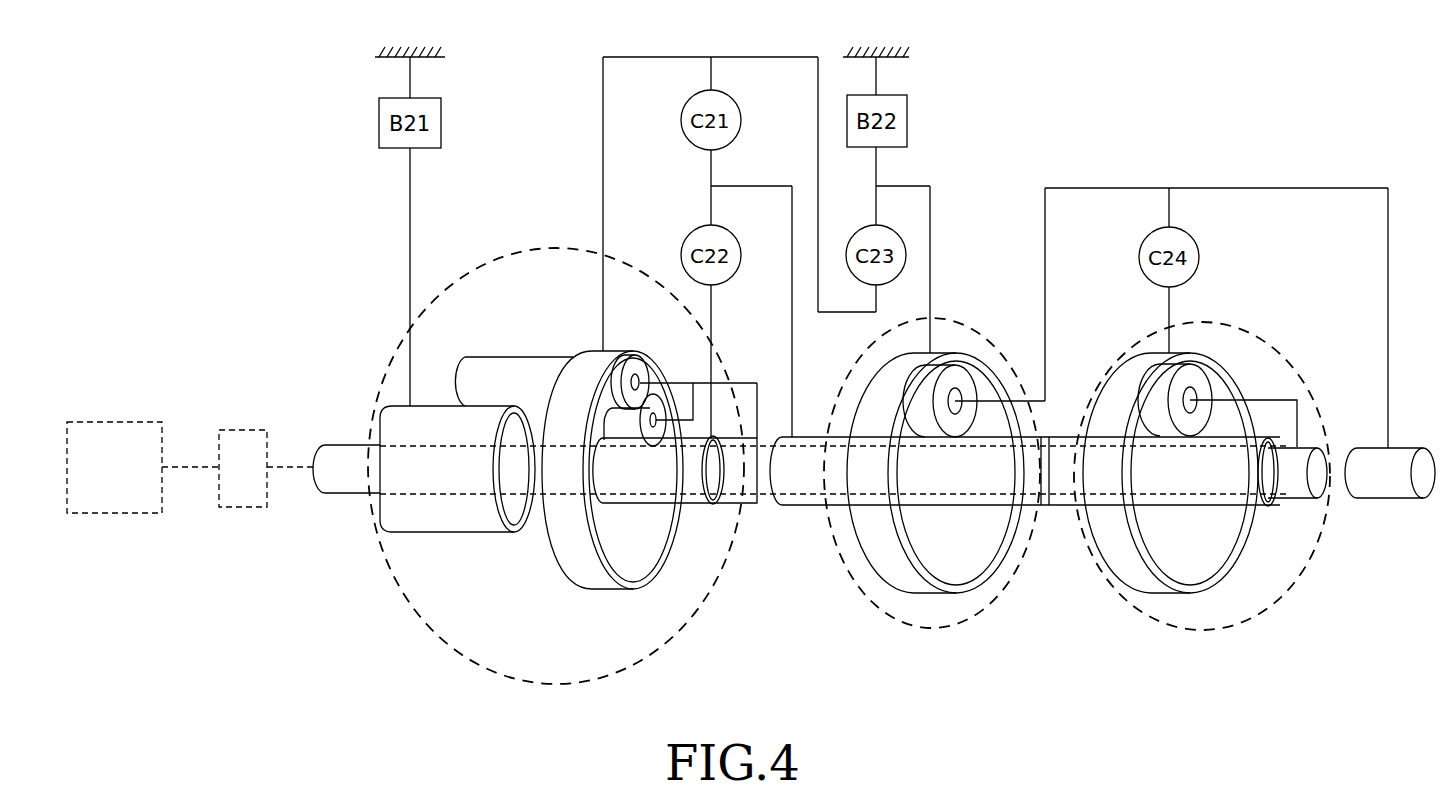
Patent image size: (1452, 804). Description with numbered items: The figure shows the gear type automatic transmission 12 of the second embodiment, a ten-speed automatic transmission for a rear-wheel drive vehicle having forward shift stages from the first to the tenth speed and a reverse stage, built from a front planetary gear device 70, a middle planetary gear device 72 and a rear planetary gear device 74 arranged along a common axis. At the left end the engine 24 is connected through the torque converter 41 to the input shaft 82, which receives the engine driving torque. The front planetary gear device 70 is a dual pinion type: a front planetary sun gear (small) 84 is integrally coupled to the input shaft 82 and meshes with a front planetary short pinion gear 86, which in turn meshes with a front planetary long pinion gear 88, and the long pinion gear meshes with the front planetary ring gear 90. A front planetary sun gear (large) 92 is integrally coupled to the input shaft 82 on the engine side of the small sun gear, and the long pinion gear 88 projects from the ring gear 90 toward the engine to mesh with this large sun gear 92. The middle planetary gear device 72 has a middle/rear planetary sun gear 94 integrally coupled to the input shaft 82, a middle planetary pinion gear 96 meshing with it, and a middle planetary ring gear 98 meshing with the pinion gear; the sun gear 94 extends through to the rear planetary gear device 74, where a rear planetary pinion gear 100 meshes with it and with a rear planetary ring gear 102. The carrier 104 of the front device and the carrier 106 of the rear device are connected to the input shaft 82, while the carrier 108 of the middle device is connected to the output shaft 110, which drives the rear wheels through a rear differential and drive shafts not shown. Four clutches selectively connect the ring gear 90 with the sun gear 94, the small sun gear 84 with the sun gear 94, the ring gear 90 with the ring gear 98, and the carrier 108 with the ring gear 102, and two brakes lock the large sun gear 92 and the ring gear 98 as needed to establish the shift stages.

The gear type automatic transmission 12 is at (1212, 113).
The engine 24 is at (118, 421).
The torque converter 41 is at (245, 428).
The front planetary gear device 70 is at (526, 247).
The middle planetary gear device 72 is at (970, 622).
The rear planetary gear device 74 is at (1237, 322).
The input shaft 82 is at (336, 444).
The front planetary sun gear (small) 84 is at (693, 490).
The front planetary short pinion gear 86 is at (625, 432).
The front planetary long pinion gear 88 is at (500, 368).
The front planetary ring gear 90 is at (592, 590).
The front planetary sun gear (large) 92 is at (457, 530).
The middle/rear planetary sun gear 94 is at (1055, 508).
The middle planetary pinion gear 96 is at (928, 425).
The middle planetary ring gear 98 is at (905, 578).
The rear planetary pinion gear 100 is at (1153, 410).
The rear planetary ring gear 102 is at (1155, 588).
The carrier of the front planetary gear device 104 is at (681, 383).
The carrier of the rear planetary gear device 106 is at (1280, 400).
The carrier of the middle planetary gear device 108 is at (988, 376).
The output shaft 110 is at (1388, 498).